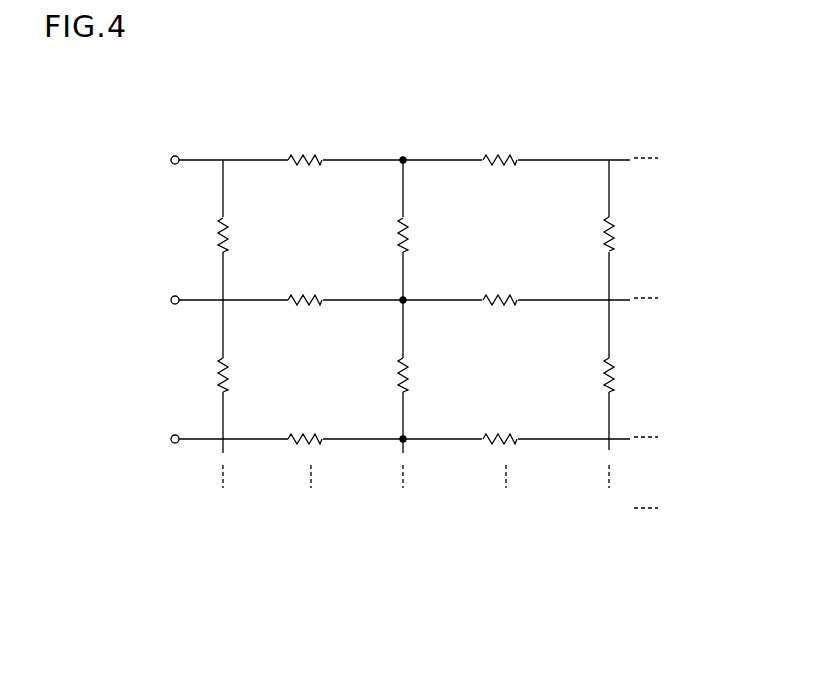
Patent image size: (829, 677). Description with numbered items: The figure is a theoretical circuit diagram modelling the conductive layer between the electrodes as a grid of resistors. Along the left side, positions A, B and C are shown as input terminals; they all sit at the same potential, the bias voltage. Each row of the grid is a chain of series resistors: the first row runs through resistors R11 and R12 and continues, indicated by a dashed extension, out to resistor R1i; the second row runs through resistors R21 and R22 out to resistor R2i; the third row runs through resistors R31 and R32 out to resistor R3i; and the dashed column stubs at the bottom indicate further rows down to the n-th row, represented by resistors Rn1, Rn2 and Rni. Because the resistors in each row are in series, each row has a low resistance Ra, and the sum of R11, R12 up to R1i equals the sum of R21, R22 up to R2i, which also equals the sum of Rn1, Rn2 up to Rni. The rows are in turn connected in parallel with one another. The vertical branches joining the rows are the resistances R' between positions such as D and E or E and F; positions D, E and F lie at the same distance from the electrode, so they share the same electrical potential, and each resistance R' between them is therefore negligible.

The position A is at (164, 161).
The position B is at (164, 301).
The position C is at (164, 440).
The position D is at (395, 146).
The position E is at (394, 288).
The position F is at (396, 426).
The resistor R11 is at (307, 145).
The resistor R12 is at (497, 145).
The resistor R1i is at (673, 158).
The resistor R21 is at (307, 285).
The resistor R22 is at (503, 285).
The resistor R2i is at (673, 297).
The resistor R31 is at (307, 426).
The resistor R32 is at (501, 426).
The resistor R3i is at (673, 442).
The resistor Rn1 is at (308, 495).
The resistor Rn2 is at (505, 495).
The resistor Rni is at (675, 512).
The resistance R' is at (430, 304).